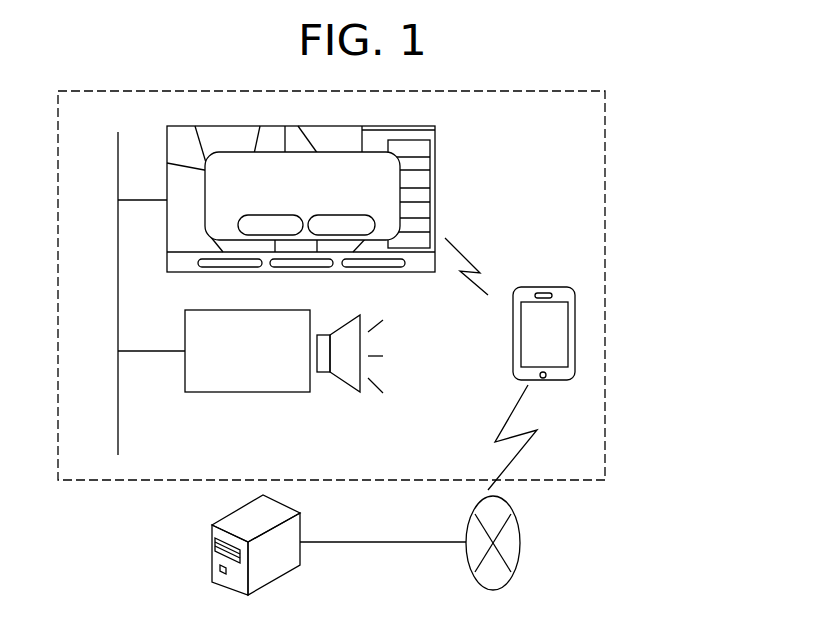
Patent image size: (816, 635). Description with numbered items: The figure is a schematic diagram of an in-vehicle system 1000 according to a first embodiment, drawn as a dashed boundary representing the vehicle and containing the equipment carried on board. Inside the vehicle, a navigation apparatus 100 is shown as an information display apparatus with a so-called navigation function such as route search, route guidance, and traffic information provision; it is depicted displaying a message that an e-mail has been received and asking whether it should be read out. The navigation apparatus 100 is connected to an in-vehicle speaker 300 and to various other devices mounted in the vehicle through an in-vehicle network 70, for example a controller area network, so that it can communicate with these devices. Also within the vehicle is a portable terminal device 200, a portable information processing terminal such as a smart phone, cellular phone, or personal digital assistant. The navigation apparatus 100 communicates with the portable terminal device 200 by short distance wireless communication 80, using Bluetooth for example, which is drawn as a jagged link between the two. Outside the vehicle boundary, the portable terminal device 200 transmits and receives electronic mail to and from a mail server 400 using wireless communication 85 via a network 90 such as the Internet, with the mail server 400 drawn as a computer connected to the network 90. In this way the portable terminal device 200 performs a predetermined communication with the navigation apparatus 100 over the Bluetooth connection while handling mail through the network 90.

The in-vehicle system 1000 is at (605, 152).
The in-vehicle network 70 is at (120, 432).
The navigation apparatus 100 is at (437, 165).
The short distance wireless communication 80 is at (467, 256).
The in-vehicle speaker 300 is at (245, 392).
The portable terminal device 200 is at (513, 343).
The wireless communication 85 is at (537, 432).
The mail server 400 is at (278, 575).
The network 90 is at (520, 548).